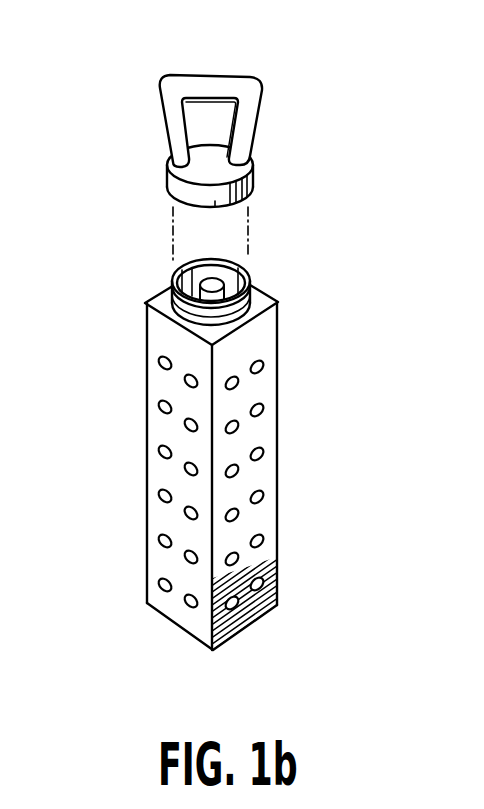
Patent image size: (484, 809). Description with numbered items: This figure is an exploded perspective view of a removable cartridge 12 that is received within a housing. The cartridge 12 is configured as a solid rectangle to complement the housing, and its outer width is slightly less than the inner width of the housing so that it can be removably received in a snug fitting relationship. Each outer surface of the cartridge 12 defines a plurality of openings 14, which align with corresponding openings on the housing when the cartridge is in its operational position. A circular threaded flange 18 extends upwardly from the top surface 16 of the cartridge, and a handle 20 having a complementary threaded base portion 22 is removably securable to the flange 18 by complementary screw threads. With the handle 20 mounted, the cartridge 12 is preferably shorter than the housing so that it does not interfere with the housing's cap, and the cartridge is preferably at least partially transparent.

The cartridge 12 is at (226, 455).
The openings 14 is at (160, 583).
The top surface 16 is at (267, 301).
The threaded flange 18 is at (248, 268).
The handle 20 is at (257, 79).
The threaded base portion 22 is at (255, 184).